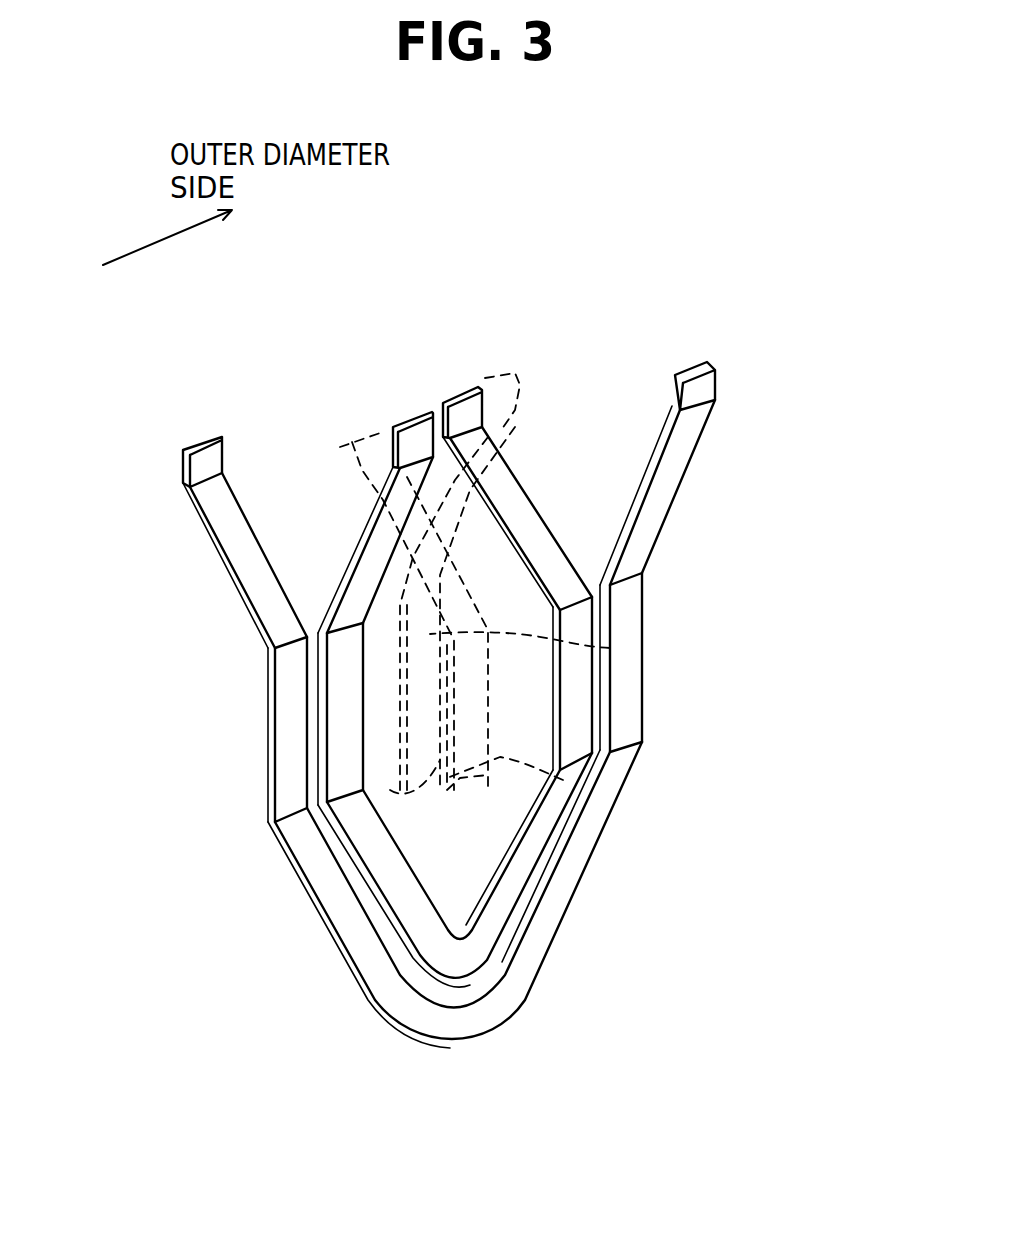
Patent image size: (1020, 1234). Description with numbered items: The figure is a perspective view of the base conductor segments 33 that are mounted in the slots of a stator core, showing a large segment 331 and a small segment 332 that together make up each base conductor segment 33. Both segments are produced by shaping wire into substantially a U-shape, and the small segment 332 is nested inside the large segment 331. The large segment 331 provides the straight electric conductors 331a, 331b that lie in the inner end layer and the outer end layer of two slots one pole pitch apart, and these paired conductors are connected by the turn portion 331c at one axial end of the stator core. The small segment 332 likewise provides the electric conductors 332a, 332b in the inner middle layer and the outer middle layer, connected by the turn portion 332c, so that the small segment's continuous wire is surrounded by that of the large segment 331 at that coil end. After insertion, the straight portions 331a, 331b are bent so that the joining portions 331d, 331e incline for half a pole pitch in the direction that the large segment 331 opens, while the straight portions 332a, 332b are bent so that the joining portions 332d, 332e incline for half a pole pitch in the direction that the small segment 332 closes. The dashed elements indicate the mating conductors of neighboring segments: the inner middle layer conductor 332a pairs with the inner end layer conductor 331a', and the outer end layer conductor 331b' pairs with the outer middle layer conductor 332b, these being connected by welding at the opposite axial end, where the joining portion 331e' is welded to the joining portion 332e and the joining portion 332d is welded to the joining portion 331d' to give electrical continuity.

The base conductor segments 33 is at (342, 1022).
The large segment 331 is at (696, 517).
The small segment 332 is at (563, 509).
The electric conductor 331a is at (215, 726).
The electric conductor 331b is at (713, 662).
The turn portion 331c is at (450, 1026).
The joining portion 331d is at (167, 542).
The joining portion 331e is at (732, 445).
The electric conductor 331a' is at (585, 791).
The electric conductor 331b' is at (621, 624).
The joining portion 331d' is at (350, 552).
The joining portion 331e' is at (506, 545).
The electric conductor 332a is at (342, 732).
The electric conductor 332b is at (577, 742).
The turn portion 332c is at (460, 962).
The joining portion 332d is at (415, 415).
The joining portion 332e is at (478, 392).